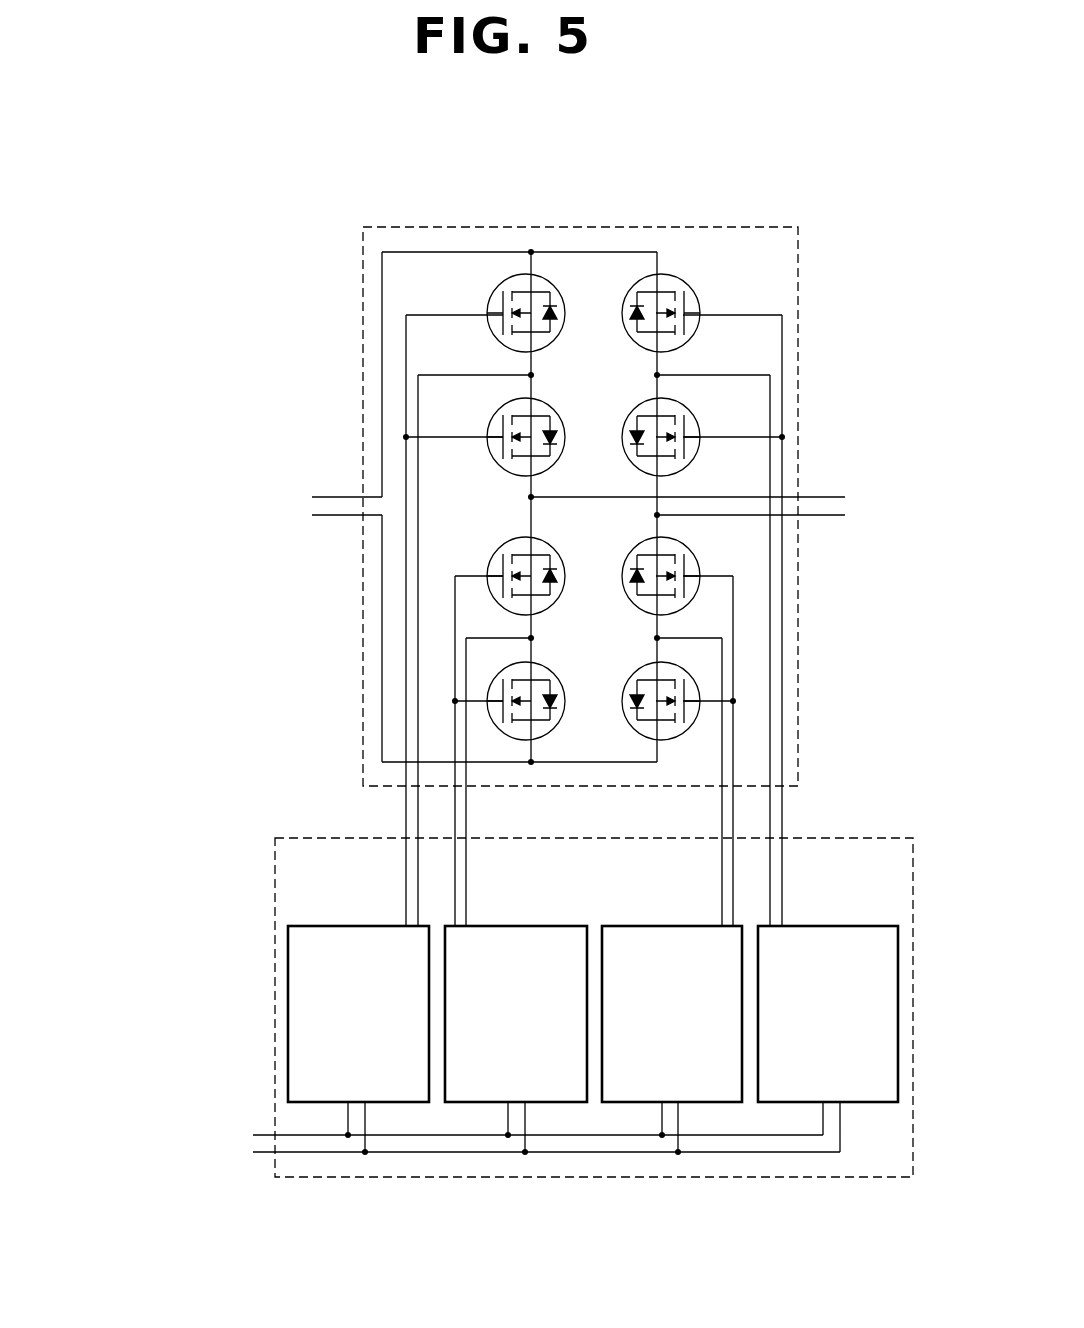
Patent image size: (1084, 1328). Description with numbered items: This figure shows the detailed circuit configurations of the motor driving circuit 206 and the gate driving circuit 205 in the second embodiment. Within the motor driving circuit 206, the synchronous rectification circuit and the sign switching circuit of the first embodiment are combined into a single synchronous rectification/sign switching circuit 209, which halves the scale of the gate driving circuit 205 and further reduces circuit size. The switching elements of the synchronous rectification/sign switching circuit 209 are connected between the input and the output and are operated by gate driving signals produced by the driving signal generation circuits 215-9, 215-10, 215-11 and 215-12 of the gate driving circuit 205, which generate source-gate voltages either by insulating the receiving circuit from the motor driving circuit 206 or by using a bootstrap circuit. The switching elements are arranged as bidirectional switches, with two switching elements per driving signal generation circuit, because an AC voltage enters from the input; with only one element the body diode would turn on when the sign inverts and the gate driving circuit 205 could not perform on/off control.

The motor driving circuit 206 is at (788, 146).
The synchronous rectification/sign switching circuit 209 is at (578, 227).
The gate driving circuit 205 is at (588, 1180).
The driving signal generation circuit 215-9 is at (356, 926).
The driving signal generation circuit 215-10 is at (513, 926).
The driving signal generation circuit 215-11 is at (669, 926).
The driving signal generation circuit 215-12 is at (827, 926).